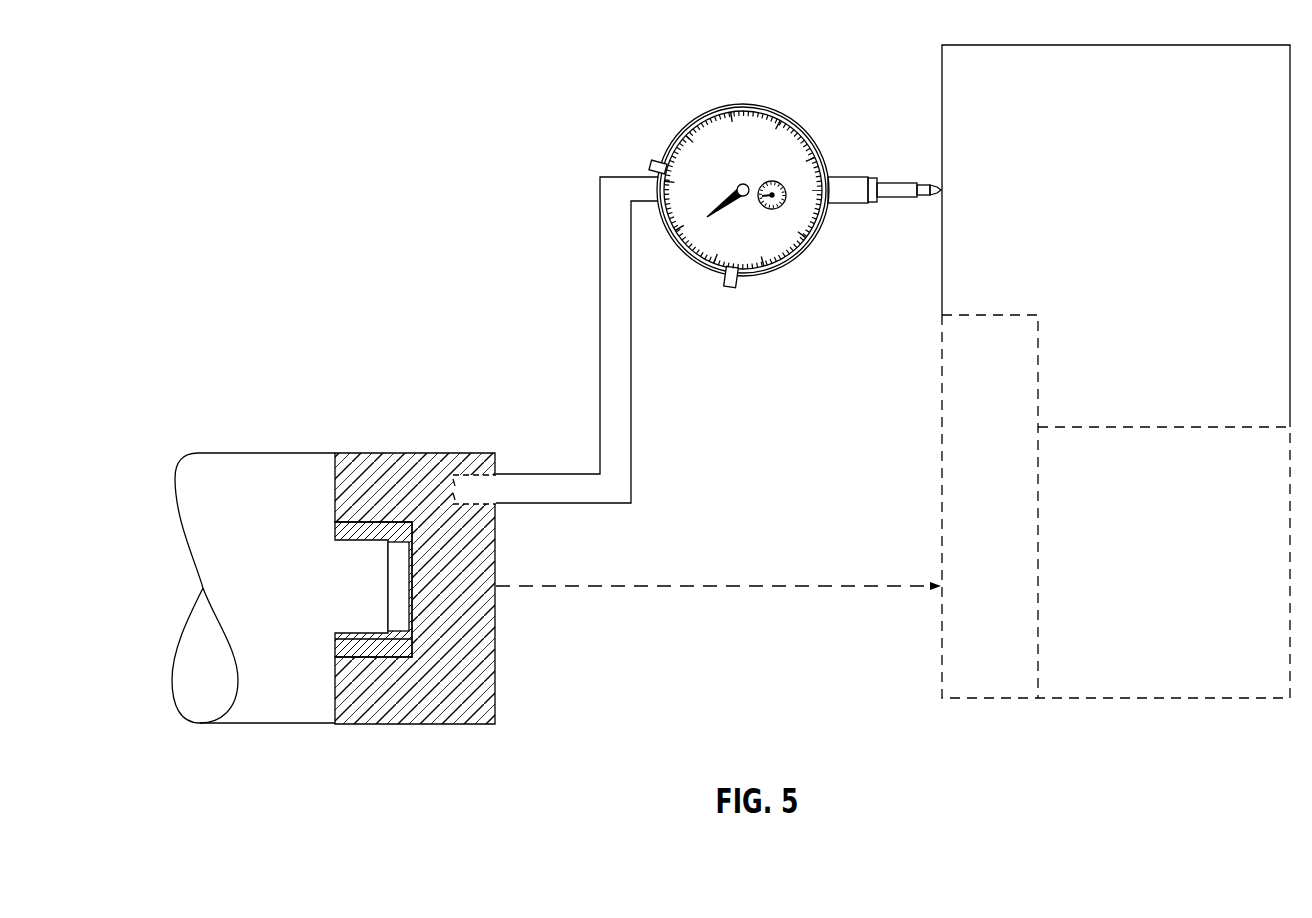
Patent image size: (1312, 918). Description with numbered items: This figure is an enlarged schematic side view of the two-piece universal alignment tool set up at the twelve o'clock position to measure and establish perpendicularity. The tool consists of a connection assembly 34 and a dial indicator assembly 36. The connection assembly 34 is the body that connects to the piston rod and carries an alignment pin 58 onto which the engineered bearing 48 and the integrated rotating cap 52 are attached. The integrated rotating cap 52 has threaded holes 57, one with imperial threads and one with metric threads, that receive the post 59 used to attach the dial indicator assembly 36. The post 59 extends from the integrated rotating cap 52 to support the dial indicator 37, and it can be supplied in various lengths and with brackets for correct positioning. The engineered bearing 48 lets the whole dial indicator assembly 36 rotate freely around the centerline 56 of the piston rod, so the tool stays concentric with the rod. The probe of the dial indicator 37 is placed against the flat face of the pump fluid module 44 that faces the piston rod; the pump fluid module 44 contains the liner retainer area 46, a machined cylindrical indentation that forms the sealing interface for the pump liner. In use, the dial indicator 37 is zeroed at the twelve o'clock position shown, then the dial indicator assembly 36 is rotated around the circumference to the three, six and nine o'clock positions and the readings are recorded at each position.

The connection assembly 34 is at (188, 580).
The dial indicator assembly 36 is at (708, 104).
The dial indicator 37 is at (742, 165).
The pump fluid module 44 is at (938, 85).
The liner retainer area 46 is at (997, 320).
The engineered bearing 48 is at (368, 517).
The integrated rotating cap 52 is at (468, 442).
The centerline of the piston rod 56 is at (790, 597).
The threaded holes 57 is at (502, 488).
The alignment pin 58 is at (386, 575).
The post 59 is at (620, 507).